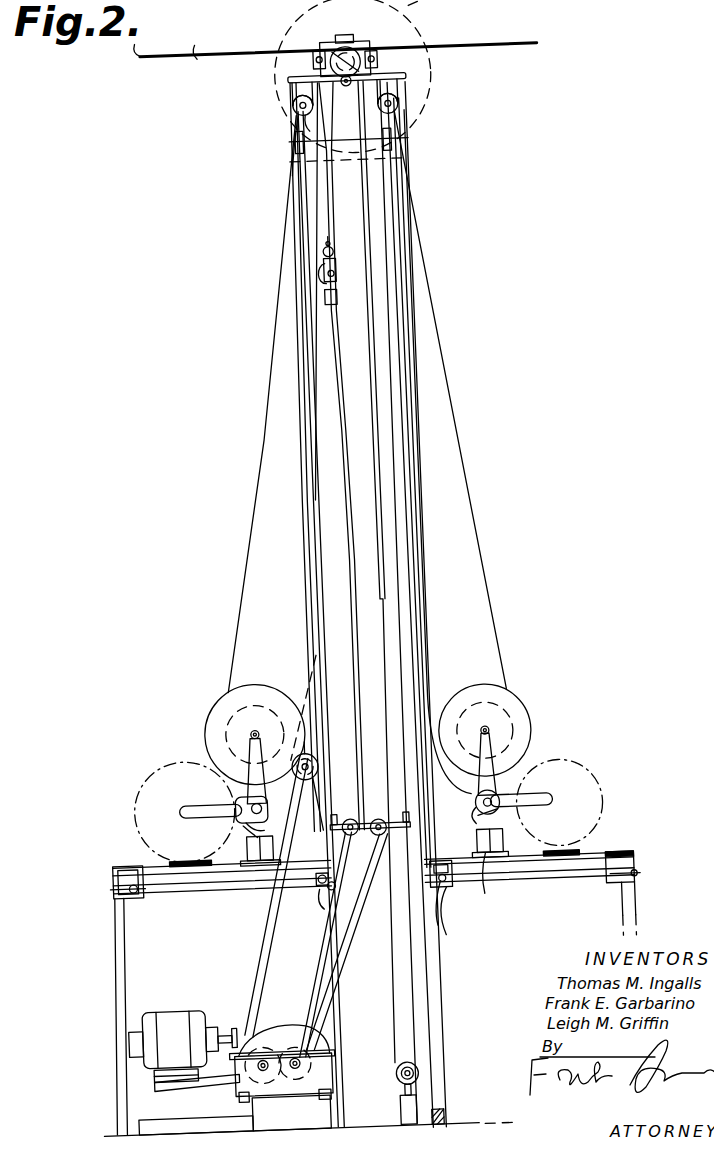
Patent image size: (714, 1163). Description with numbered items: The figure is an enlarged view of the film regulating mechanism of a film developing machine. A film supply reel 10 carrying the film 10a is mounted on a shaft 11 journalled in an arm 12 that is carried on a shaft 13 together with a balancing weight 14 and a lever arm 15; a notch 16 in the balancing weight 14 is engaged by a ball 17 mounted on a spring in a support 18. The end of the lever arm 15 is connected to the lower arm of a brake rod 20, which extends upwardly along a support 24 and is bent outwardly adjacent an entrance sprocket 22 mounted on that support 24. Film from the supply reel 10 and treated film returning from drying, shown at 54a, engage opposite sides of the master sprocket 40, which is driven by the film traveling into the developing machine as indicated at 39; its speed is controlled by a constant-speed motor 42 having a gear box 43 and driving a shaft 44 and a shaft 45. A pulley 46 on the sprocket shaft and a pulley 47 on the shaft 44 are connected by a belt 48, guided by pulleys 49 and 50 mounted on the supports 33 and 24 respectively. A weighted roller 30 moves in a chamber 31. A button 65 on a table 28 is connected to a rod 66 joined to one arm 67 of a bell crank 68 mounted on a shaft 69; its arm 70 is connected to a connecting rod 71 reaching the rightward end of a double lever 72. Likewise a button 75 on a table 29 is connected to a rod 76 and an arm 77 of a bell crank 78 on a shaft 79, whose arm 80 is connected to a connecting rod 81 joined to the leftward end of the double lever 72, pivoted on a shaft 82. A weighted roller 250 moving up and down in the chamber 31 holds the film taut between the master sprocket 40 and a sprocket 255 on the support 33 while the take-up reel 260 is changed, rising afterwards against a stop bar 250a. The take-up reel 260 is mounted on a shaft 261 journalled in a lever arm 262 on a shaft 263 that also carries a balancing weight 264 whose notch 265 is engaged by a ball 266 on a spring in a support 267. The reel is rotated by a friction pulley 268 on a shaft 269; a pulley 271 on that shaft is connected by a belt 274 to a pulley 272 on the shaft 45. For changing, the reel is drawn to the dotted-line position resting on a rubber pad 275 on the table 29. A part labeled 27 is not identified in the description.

The film supply reel 10 is at (484, 729).
The film 10a is at (450, 399).
The shaft 11 is at (485, 730).
The arm 12 is at (485, 748).
The shaft 13 is at (487, 802).
The balancing weight 14 is at (559, 802).
The lever arm 15 is at (521, 800).
The notch 16 is at (485, 815).
The ball 17 is at (489, 842).
The support 18 is at (484, 873).
The brake rod 20 is at (385, 604).
The entrance sprocket 22 is at (387, 96).
The support 24 is at (349, 145).
The bearing strip 27 is at (561, 853).
The table 28 is at (620, 893).
The table 29 is at (128, 882).
The weighted roller 30 is at (408, 1093).
The chamber 31 is at (438, 1116).
The support 33 is at (262, 404).
The film entering the developing machine 39 is at (335, 44).
The master sprocket 40 is at (345, 56).
The constant-speed motor 42 is at (184, 1050).
The gear box 43 is at (228, 1038).
The shaft 44 is at (283, 1062).
The shaft 45 is at (262, 1065).
The pulley 46 is at (345, 59).
The pulley 47 is at (294, 1063).
The belt 48 is at (317, 291).
The pulley 49 is at (350, 827).
The pulley 50 is at (378, 827).
The film from the drying conduit 54a is at (195, 52).
The button 65 is at (625, 873).
The rod 66 is at (530, 867).
The arm 67 is at (442, 877).
The bell crank 68 is at (441, 873).
The shaft 69 is at (444, 911).
The arm 70 is at (438, 903).
The connecting rod 71 is at (412, 483).
The double lever 72 is at (347, 78).
The button 75 is at (127, 889).
The rod 76 is at (222, 876).
The arm 77 is at (276, 897).
The bell crank 78 is at (321, 899).
The shaft 79 is at (322, 879).
The arm 80 is at (331, 886).
The connecting rod 81 is at (321, 619).
The shaft 82 is at (346, 81).
The weighted roller 250 is at (327, 275).
The stop bar 250a is at (328, 242).
The sprocket 255 is at (302, 129).
The take-up reel 260 is at (255, 735).
The shaft 261 is at (255, 734).
The lever arm 262 is at (255, 771).
The shaft 263 is at (251, 809).
The balancing weight 264 is at (185, 812).
The notch 265 is at (210, 811).
The ball 266 is at (254, 830).
The support 267 is at (260, 851).
The friction pulley 268 is at (305, 766).
The shaft 269 is at (317, 803).
The pulley 271 is at (303, 707).
The pulley 272 is at (234, 1115).
The belt 274 is at (344, 944).
The rubber pad 275 is at (190, 863).